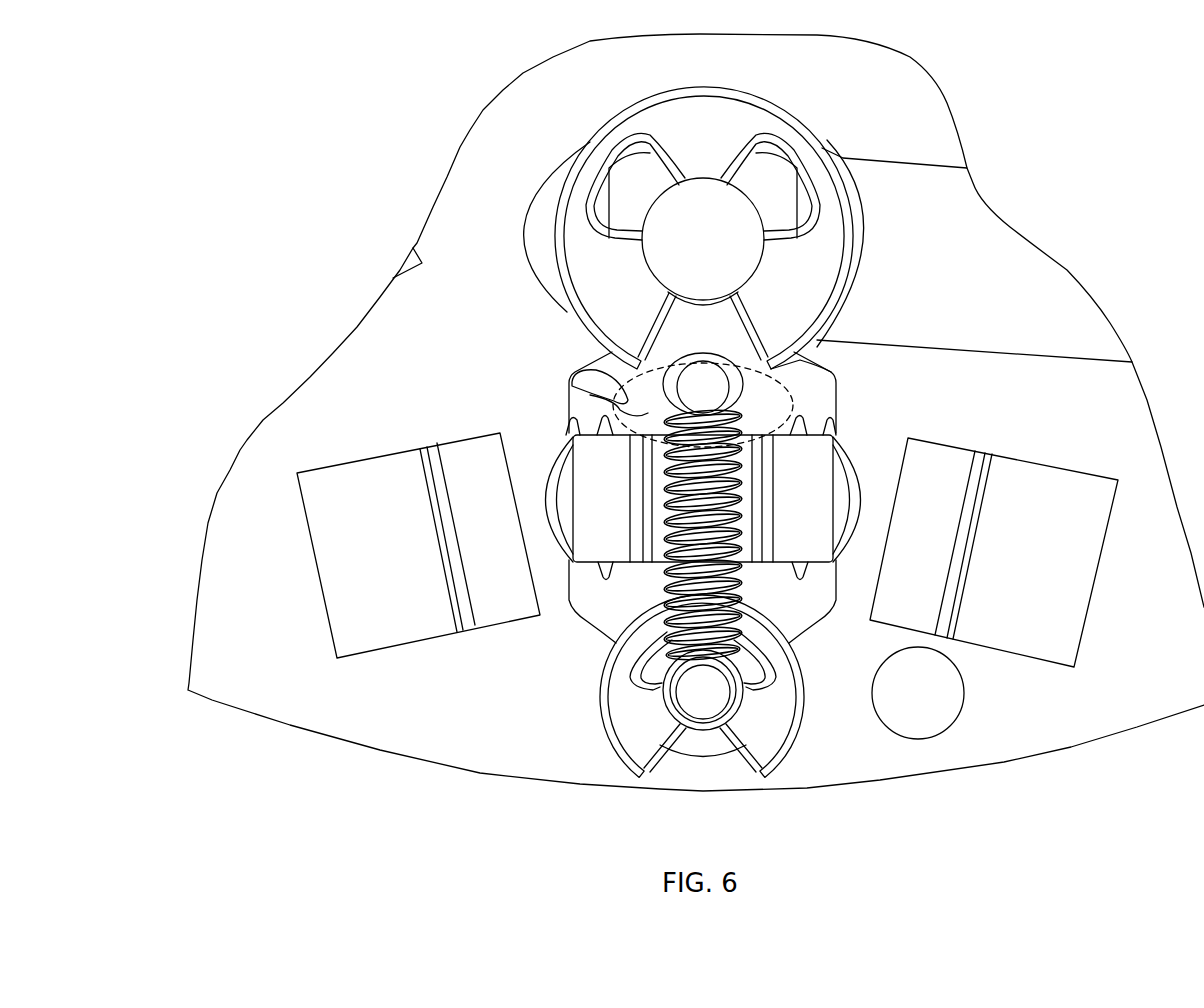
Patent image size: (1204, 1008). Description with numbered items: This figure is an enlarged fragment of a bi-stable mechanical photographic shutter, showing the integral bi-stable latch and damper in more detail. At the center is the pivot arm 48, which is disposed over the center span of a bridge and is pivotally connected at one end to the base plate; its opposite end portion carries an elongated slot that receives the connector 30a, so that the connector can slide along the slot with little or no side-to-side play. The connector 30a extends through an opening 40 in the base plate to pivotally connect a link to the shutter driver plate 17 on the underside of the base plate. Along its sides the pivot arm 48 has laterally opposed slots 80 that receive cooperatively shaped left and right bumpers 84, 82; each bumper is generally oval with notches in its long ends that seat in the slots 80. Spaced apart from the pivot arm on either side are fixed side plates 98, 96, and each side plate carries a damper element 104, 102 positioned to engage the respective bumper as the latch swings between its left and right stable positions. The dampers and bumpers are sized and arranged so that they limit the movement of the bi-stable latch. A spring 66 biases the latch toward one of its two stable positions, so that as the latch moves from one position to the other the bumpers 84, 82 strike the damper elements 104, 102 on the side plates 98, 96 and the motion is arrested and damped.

The connector 30a is at (742, 253).
The opening 40 is at (598, 374).
The shutter driver plate 17 is at (590, 395).
The pivot arm 48 is at (822, 400).
The slots 80 is at (600, 420).
The left bumper 84 is at (560, 475).
The right bumper 82 is at (848, 468).
The spring 66 is at (805, 620).
The side plate 98 is at (393, 569).
The side plate 96 is at (1062, 572).
The damper element 104 is at (475, 455).
The damper element 102 is at (930, 455).